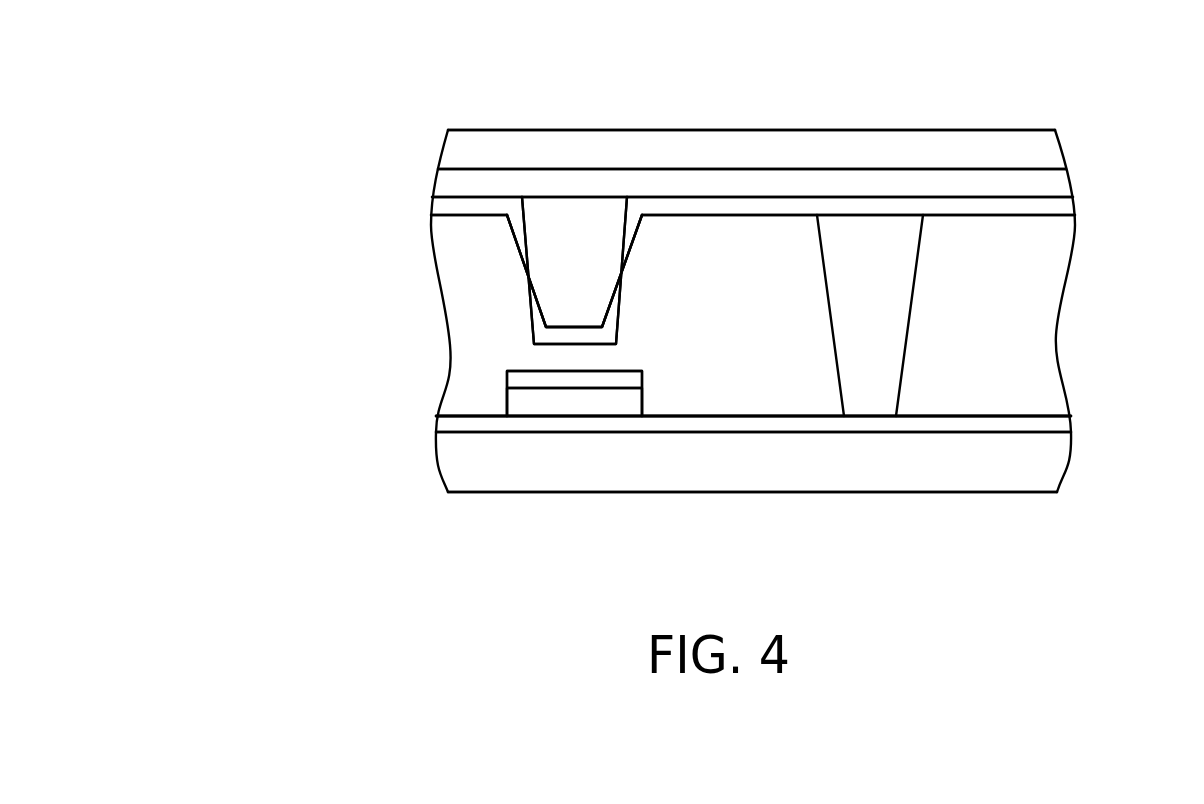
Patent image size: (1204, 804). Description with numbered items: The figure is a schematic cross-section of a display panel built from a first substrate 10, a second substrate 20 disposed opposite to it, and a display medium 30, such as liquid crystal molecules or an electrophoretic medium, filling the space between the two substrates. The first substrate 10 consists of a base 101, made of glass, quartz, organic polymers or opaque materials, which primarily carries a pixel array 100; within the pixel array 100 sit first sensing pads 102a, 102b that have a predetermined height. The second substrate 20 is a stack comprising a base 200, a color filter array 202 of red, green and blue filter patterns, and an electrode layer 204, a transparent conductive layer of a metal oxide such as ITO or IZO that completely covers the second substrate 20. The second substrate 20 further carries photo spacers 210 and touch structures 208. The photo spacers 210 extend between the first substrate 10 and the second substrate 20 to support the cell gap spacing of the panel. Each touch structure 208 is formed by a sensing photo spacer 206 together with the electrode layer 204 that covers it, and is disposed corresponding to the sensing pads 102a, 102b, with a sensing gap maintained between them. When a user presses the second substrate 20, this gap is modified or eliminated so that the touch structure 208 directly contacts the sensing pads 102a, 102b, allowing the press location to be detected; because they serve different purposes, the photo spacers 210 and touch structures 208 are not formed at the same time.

The first substrate 10 is at (1108, 415).
The second substrate 20 is at (1108, 132).
The display medium 30 is at (1108, 215).
The pixel array 100 is at (247, 372).
The base 101 is at (478, 458).
The first sensing pad 102a is at (478, 371).
The first sensing pad 102b is at (477, 393).
The base 200 is at (478, 153).
The color filter array 202 is at (460, 182).
The electrode layer 204 is at (447, 204).
The sensing photo spacer 206 is at (558, 272).
The touch structure 208 is at (307, 252).
The photo spacer 210 is at (868, 243).